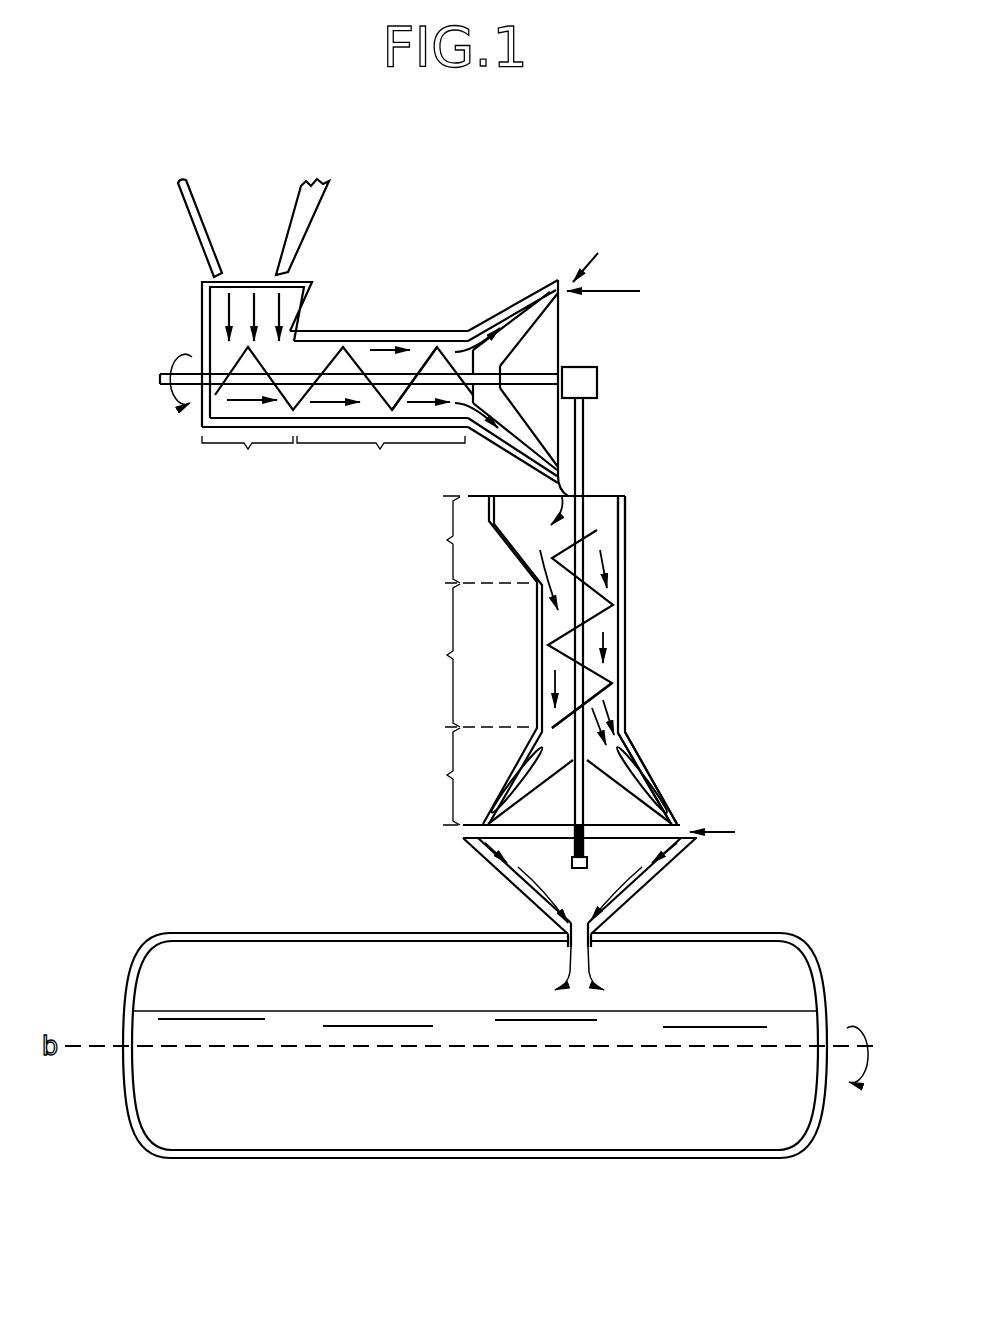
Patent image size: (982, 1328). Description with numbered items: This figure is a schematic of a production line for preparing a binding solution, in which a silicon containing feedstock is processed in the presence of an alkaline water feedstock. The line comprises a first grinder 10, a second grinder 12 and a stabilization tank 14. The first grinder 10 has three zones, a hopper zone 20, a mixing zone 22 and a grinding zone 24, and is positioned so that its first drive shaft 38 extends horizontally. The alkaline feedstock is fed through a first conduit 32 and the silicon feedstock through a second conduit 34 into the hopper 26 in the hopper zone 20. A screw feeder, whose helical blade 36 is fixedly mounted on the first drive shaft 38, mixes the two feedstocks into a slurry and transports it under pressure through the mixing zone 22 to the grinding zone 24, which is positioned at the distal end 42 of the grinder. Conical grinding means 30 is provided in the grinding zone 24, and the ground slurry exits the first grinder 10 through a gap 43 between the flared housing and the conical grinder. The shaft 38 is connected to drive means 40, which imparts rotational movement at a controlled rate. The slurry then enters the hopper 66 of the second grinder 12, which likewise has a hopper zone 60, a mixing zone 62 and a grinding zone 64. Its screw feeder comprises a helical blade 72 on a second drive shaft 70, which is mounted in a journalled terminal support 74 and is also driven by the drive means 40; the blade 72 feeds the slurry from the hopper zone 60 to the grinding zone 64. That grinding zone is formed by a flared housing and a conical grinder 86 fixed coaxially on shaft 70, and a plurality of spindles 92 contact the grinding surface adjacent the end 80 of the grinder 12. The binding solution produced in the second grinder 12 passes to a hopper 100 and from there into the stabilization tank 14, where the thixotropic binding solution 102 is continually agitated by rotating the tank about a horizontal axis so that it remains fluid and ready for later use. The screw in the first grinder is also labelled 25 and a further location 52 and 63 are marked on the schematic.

The first grinder 10 is at (358, 330).
The second grinder 12 is at (627, 628).
The stabilization tank 14 is at (720, 933).
The hopper zone 20 is at (247, 459).
The mixing zone 22 is at (381, 459).
The grinding zone 24 is at (549, 481).
The screw 25 is at (375, 402).
The hopper 26 is at (222, 314).
The conical grinding means 30 is at (544, 283).
The first conduit 32 is at (200, 233).
The second conduit 34 is at (305, 222).
The helical blade 36 is at (423, 327).
The first drive shaft 38 is at (348, 388).
The drive means 40 is at (593, 383).
The distal end 42 is at (603, 253).
The gap 43 is at (565, 478).
The upper nozzle passage 52 is at (513, 305).
The hopper zone 60 is at (470, 539).
The mixing zone 62 is at (470, 655).
The screw end 63 is at (612, 682).
The grinding zone 64 is at (434, 776).
The hopper 66 is at (610, 508).
The second drive shaft 70 is at (582, 447).
The helical blade 72 is at (603, 558).
The journalled terminal support 74 is at (588, 863).
The end 80 is at (619, 833).
The conical grinder 86 is at (660, 797).
The spindles 92 is at (630, 758).
The hopper 100 is at (522, 860).
The binding solution 102 is at (345, 1017).